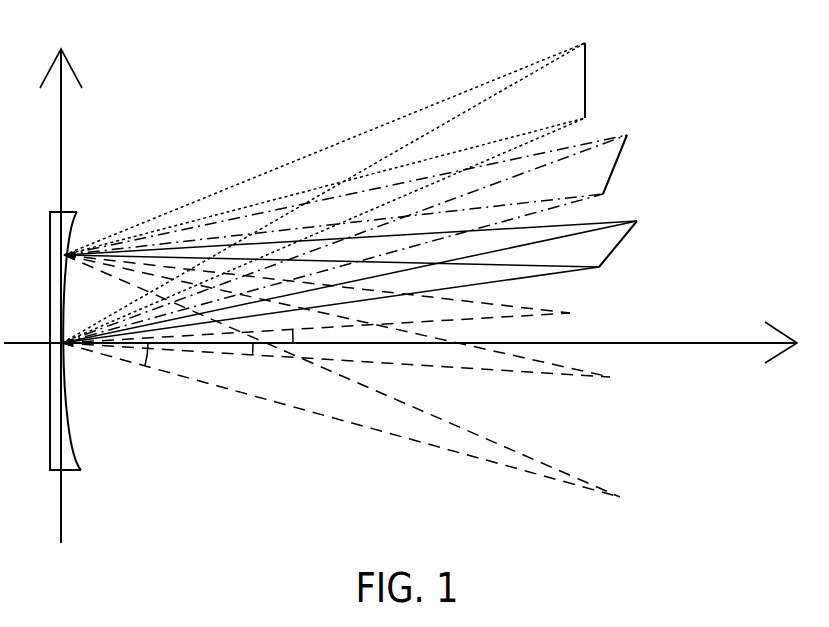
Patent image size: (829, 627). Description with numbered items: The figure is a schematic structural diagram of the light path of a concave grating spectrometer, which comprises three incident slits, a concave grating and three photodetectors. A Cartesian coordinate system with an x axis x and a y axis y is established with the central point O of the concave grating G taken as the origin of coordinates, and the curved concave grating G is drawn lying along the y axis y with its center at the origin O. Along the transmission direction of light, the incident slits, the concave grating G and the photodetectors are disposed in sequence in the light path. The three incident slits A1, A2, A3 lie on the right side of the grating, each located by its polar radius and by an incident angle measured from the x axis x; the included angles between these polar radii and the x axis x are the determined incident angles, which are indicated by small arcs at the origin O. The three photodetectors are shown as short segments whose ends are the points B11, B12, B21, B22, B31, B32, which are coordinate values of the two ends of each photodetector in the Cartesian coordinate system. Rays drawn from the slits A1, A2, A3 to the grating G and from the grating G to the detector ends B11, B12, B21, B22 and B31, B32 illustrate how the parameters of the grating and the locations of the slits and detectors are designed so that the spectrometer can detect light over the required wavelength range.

The x axis x is at (401, 355).
The y axis y is at (53, 296).
The concave grating G is at (50, 446).
The point P on lens surface P is at (75, 240).
The central point O is at (59, 351).
The end of photodetector B31B32 B31 is at (343, 182).
The end of photodetector B31B32 B32 is at (344, 217).
The end of photodetector B21B22 B21 is at (362, 239).
The end of photodetector B21B22 B22 is at (352, 262).
The end of photodetector B11B12 B11 is at (368, 282).
The end of photodetector B11B12 B12 is at (351, 299).
The incident slit A1 is at (328, 299).
The incident slit A2 is at (349, 331).
The incident slit A3 is at (355, 385).